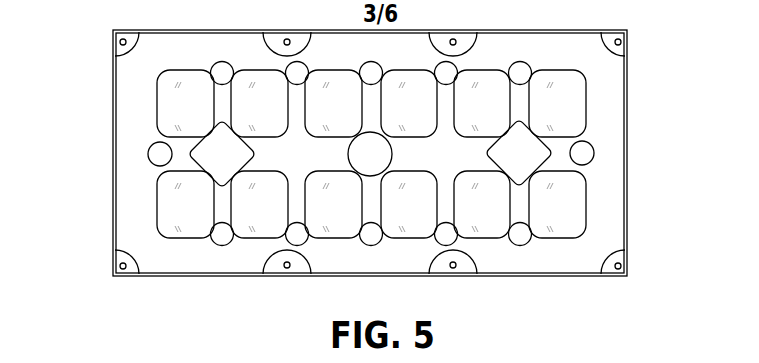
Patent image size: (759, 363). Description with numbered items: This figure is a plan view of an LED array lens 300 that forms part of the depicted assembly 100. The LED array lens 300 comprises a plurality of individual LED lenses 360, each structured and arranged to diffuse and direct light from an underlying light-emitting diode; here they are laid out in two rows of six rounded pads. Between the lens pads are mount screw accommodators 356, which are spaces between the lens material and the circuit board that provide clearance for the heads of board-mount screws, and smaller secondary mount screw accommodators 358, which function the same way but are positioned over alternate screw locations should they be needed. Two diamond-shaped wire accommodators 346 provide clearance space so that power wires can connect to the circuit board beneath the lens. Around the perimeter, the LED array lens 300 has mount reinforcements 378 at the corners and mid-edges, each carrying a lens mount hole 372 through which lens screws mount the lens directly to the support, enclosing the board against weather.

The electronic device assembly 100 is at (88, 64).
The LED array lens 300 is at (628, 188).
The wire accommodator 346 is at (192, 157).
The mount screw accommodator 356 is at (149, 150).
The secondary mount screw accommodator 358 is at (372, 62).
The LED lens 360 is at (183, 70).
The lens mount hole 372 is at (290, 43).
The mount reinforcement 378 is at (268, 44).